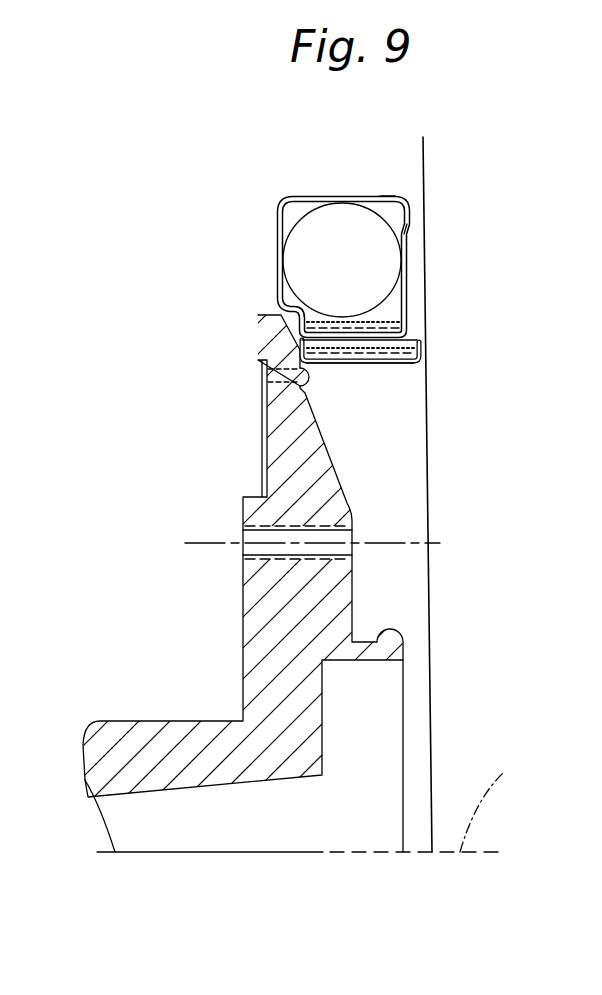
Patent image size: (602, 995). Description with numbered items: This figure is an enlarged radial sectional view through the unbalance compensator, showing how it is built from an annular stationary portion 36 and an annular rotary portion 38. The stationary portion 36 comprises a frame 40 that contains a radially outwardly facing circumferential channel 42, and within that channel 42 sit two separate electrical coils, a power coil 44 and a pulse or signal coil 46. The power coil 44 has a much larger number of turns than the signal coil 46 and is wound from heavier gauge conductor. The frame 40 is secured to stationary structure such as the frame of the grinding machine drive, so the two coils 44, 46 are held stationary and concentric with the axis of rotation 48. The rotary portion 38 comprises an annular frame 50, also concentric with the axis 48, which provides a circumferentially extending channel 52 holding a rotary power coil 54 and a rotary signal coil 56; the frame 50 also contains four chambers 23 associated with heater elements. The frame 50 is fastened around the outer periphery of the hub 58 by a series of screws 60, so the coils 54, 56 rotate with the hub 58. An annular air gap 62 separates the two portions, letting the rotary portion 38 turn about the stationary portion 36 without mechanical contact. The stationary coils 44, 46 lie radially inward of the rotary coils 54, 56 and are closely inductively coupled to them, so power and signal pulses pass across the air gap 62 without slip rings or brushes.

The chamber 23 is at (380, 205).
The stationary portion 36 is at (428, 378).
The rotary portion 38 is at (415, 231).
The frame 40 is at (386, 362).
The circumferential channel 42 is at (353, 362).
The power coil 44 is at (362, 362).
The signal coil 46 is at (317, 350).
The axis of rotation 48 is at (497, 804).
The frame 50 is at (280, 215).
The circumferentially extending channel 52 is at (382, 327).
The power coil 54 is at (360, 328).
The signal coil 56 is at (327, 327).
The hub 58 is at (345, 486).
The screw 60 is at (312, 377).
The air gap 62 is at (393, 340).